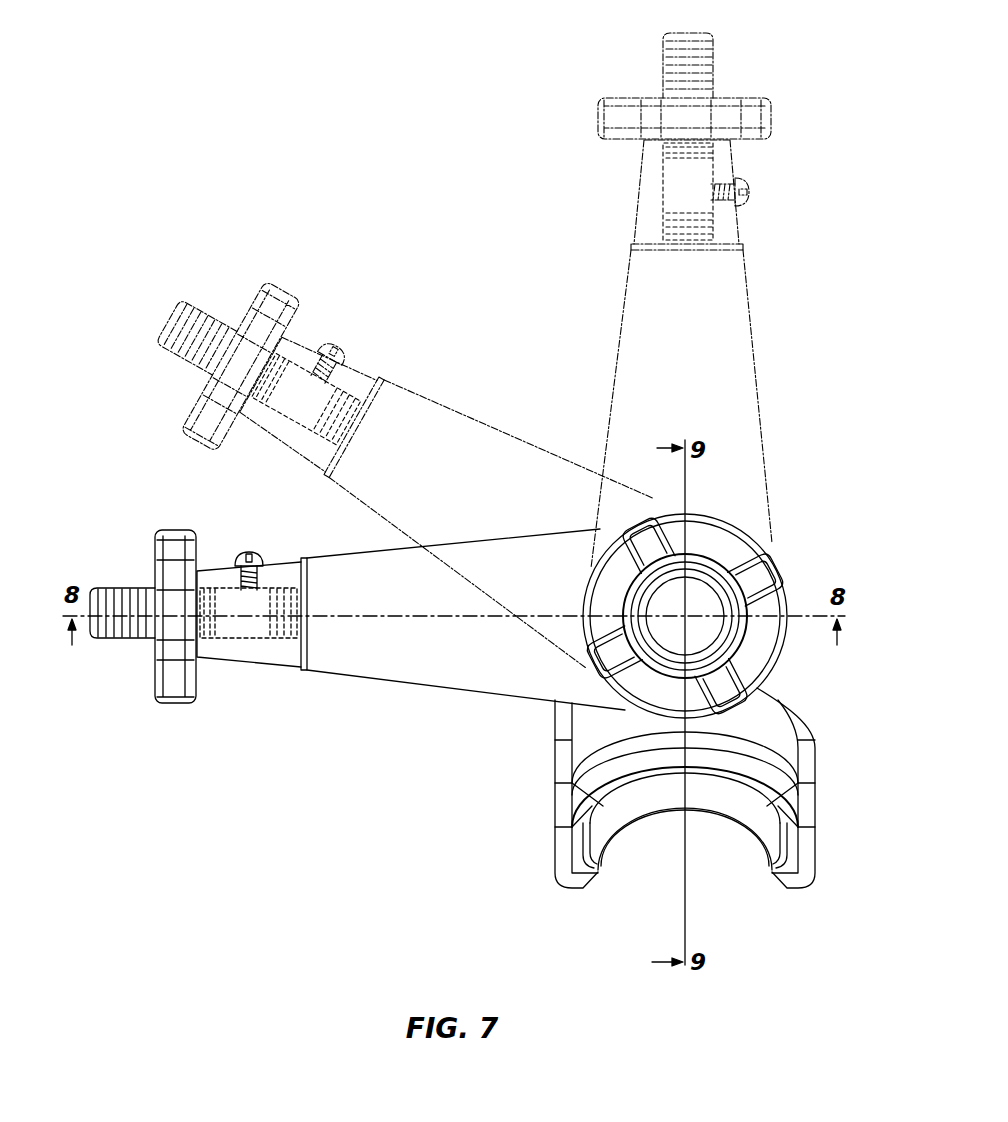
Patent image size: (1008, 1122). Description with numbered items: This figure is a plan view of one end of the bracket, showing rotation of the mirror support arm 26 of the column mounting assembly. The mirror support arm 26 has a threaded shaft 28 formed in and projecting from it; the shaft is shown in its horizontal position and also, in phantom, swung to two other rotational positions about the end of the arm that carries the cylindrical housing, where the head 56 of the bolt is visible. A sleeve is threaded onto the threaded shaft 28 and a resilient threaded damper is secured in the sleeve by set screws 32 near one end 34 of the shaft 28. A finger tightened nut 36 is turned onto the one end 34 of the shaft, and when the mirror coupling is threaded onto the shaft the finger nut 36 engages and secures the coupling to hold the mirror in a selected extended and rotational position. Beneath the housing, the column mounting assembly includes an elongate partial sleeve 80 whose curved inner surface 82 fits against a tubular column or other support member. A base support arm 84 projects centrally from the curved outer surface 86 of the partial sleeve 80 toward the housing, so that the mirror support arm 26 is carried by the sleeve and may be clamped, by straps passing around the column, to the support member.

The mirror support arm 26 is at (432, 670).
The threaded shaft 28 is at (278, 642).
The set screws 32 is at (250, 551).
The one end of the shaft 34 is at (110, 641).
The finger tightened nut 36 is at (170, 705).
The head of bolt 56 is at (762, 572).
The elongate partial sleeve 80 is at (705, 814).
The curved inner surface 82 is at (757, 840).
The base support arm 84 is at (772, 712).
The curved outer surface 86 is at (784, 762).